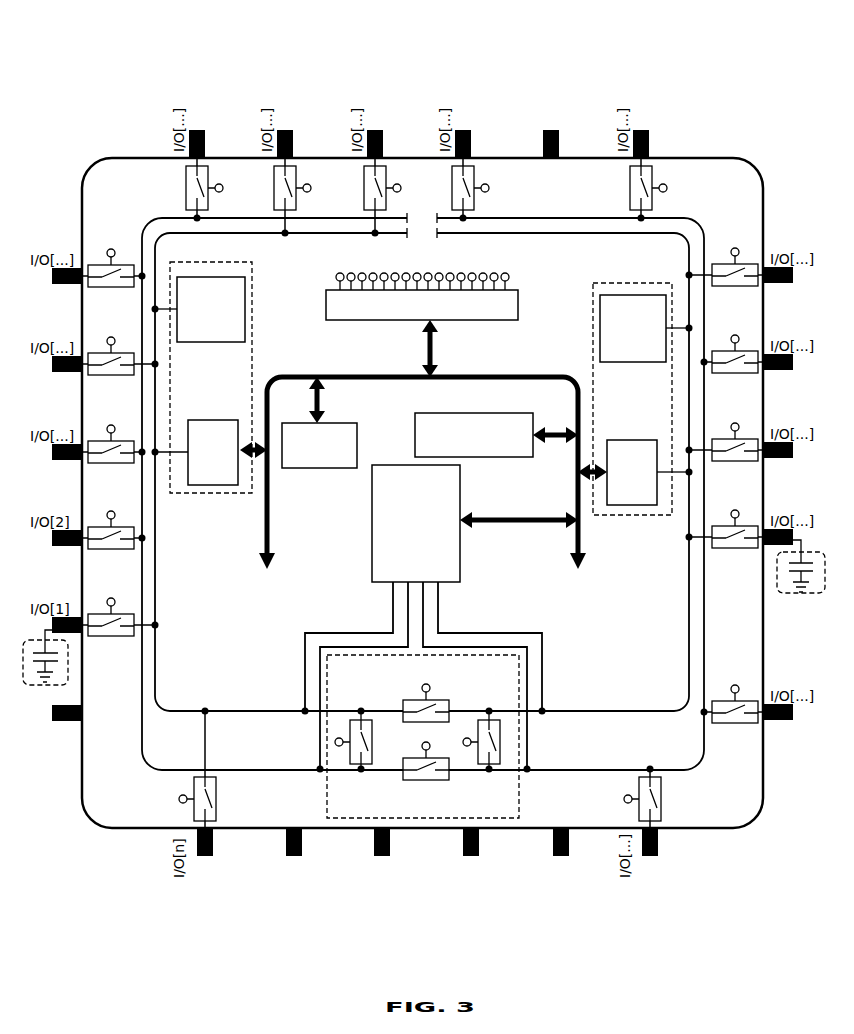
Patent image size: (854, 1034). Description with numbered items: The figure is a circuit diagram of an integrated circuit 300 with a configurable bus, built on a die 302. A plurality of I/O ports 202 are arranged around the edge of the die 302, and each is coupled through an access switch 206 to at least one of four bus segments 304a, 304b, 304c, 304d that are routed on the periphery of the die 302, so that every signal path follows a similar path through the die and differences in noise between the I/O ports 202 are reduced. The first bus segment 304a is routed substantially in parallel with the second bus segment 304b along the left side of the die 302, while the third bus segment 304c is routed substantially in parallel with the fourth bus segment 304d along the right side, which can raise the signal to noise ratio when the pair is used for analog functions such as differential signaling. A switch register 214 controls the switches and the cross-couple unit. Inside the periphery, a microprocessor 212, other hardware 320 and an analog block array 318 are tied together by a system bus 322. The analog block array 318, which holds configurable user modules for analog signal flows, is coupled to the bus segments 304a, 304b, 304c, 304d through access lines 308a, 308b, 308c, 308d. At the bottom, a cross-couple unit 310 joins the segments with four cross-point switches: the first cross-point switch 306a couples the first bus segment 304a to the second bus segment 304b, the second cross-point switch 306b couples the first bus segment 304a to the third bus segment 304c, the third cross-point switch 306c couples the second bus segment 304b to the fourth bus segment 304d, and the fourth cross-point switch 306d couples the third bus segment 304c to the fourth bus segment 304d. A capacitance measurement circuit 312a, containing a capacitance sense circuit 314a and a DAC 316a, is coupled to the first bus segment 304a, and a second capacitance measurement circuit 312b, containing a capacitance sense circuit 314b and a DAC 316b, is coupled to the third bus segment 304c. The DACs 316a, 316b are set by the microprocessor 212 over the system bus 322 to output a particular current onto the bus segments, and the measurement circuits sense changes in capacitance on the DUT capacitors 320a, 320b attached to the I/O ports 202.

The integrated circuit 300 is at (422, 426).
The die 302 is at (422, 462).
The I/O ports 202 is at (199, 858).
The access switches 206 is at (185, 182).
The switch register 214 is at (422, 286).
The microprocessor 212 is at (319, 445).
The system bus 322 is at (423, 444).
The other hardware 320 is at (474, 435).
The analog block array 318 is at (416, 523).
The capacitance measurement circuit 312a is at (202, 377).
The capacitance sense circuit 314a is at (199, 309).
The digital to analog converter 316a is at (195, 452).
The capacitance measurement circuit 312b is at (643, 399).
The capacitance sense circuit 314b is at (646, 328).
The digital to analog converter 316b is at (650, 472).
The access line 308a is at (304, 633).
The access line 308b is at (364, 647).
The access line 308c is at (543, 640).
The access line 308d is at (478, 647).
The bus segment[1] 304a is at (178, 711).
The bus segment[2] 304b is at (305, 769).
The bus segment[3] 304c is at (664, 710).
The bus segment[4] 304d is at (565, 769).
The cross-point switch CPSW1 306a is at (349, 736).
The cross-point switch CPSW2 306b is at (443, 700).
The cross-point switch CPSW3 306c is at (418, 780).
The cross-point switch CPSW4 306d is at (475, 762).
The cross-couple unit 310 is at (423, 800).
The DUT capacitor 320a is at (22, 686).
The DUT capacitor 320b is at (777, 575).